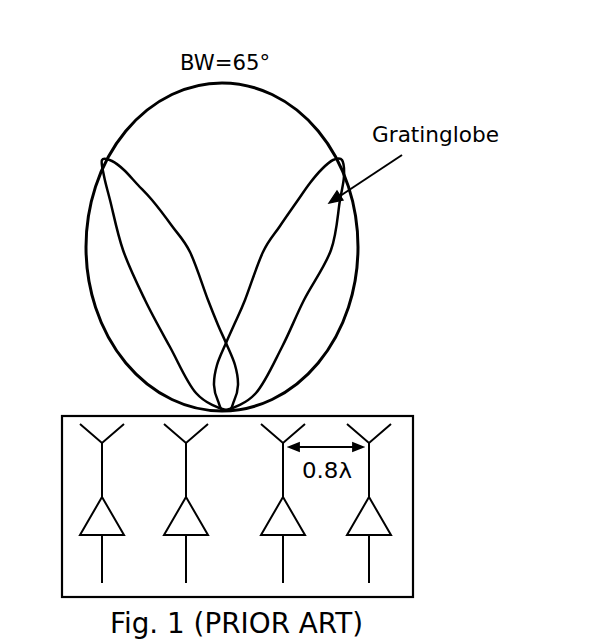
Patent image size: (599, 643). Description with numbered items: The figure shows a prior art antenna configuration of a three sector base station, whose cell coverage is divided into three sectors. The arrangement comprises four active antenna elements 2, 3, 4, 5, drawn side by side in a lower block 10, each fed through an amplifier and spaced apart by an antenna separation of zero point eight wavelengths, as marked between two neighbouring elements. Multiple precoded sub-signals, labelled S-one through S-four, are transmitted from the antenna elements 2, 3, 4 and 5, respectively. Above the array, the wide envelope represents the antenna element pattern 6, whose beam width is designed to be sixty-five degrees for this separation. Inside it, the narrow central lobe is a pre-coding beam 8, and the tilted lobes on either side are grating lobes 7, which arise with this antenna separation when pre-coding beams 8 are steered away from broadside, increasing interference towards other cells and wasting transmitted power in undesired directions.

The active antenna element 2 is at (97, 470).
The active antenna element 3 is at (182, 469).
The active antenna element 4 is at (279, 469).
The active antenna element 5 is at (377, 469).
The antenna element pattern 6 is at (343, 319).
The grating lobe 7 is at (330, 248).
The pre-coding beam 8 is at (124, 253).
The antenna array 10 is at (405, 512).